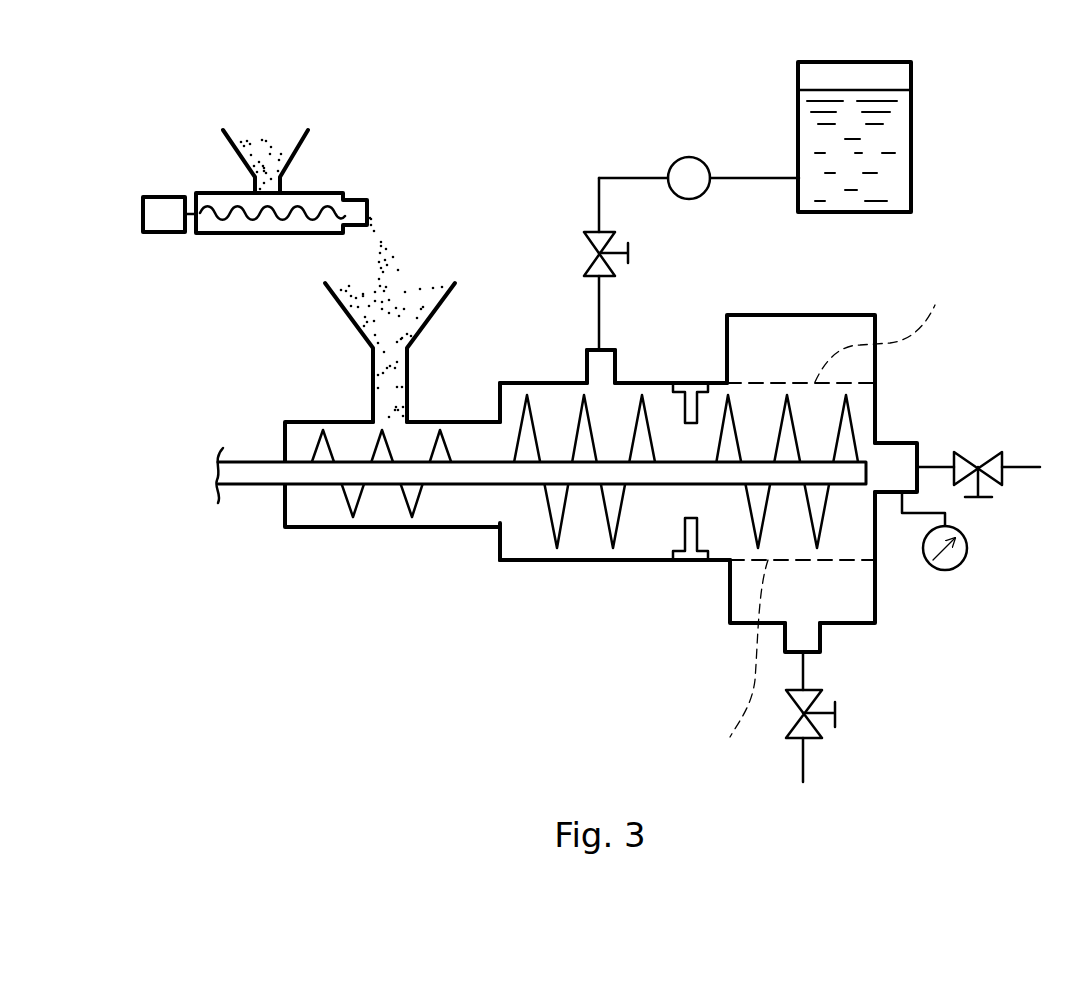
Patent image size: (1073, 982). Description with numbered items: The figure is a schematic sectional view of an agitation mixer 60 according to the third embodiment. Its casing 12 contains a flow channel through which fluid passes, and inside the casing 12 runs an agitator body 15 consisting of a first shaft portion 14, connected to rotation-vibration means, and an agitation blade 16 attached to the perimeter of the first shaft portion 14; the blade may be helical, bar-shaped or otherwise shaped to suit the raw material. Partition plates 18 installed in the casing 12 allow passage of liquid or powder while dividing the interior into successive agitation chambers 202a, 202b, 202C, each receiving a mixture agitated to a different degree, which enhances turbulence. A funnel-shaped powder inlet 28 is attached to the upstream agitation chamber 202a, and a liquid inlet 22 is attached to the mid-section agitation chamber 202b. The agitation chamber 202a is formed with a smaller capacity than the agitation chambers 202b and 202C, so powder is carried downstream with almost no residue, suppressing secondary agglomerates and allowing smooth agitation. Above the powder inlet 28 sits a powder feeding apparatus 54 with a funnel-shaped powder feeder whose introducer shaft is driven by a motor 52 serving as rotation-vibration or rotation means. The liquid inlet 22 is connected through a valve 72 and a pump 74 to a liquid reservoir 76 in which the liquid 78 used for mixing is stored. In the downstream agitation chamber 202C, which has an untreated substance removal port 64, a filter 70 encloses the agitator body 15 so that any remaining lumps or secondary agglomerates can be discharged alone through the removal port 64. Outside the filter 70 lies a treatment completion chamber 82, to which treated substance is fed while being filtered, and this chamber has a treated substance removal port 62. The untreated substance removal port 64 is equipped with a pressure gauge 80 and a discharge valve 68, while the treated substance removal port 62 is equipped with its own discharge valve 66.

The casing 12 is at (542, 562).
The first shaft portion 14 is at (247, 463).
The agitator body 15 is at (573, 425).
The agitation blade 16 is at (347, 503).
The partition plate 18 is at (687, 378).
The liquid inlet 22 is at (628, 357).
The powder inlet 28 is at (345, 312).
The motor 52 is at (163, 197).
The powder feeding apparatus 54 is at (327, 193).
The agitation mixer 60 is at (578, 597).
The treated substance removal port 62 is at (822, 638).
The untreated substance removal port 64 is at (900, 443).
The discharge valve 66 is at (813, 748).
The discharge valve 68 is at (990, 450).
The filter 70 is at (832, 521).
The valve 72 is at (588, 240).
The pump 74 is at (689, 157).
The liquid reservoir 76 is at (911, 118).
The liquid 78 is at (890, 173).
The pressure gauge 80 is at (968, 548).
The treatment completion chamber 82 is at (800, 315).
The agitation chamber 202a is at (390, 516).
The agitation chamber 202b is at (637, 552).
The agitation chamber 202C is at (860, 543).